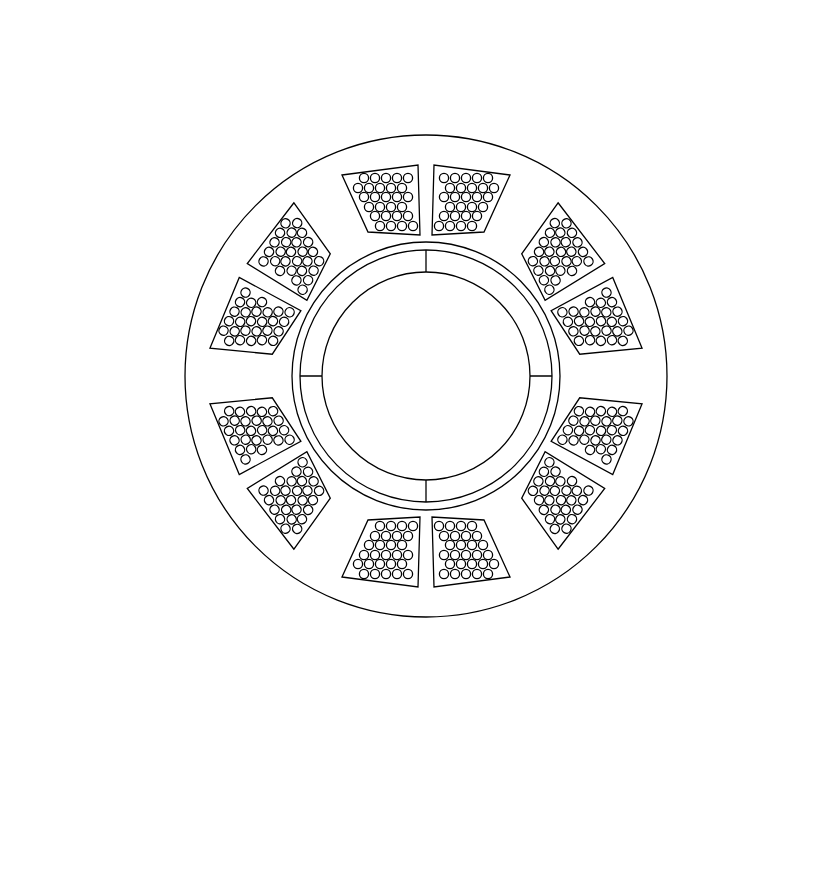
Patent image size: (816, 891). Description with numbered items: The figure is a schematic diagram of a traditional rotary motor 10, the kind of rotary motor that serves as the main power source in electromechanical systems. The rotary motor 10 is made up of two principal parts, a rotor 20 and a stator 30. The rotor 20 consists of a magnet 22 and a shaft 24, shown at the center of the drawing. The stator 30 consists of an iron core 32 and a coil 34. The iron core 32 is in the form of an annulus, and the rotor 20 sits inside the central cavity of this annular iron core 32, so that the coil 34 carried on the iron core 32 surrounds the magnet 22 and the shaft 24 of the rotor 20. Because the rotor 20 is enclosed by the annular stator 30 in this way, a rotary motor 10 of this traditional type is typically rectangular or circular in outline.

The rotary motor 10 is at (290, 148).
The rotor 20 is at (110, 378).
The magnet 22 is at (310, 367).
The shaft 24 is at (398, 420).
The stator 30 is at (552, 58).
The iron core 32 is at (518, 218).
The coil 34 is at (393, 174).